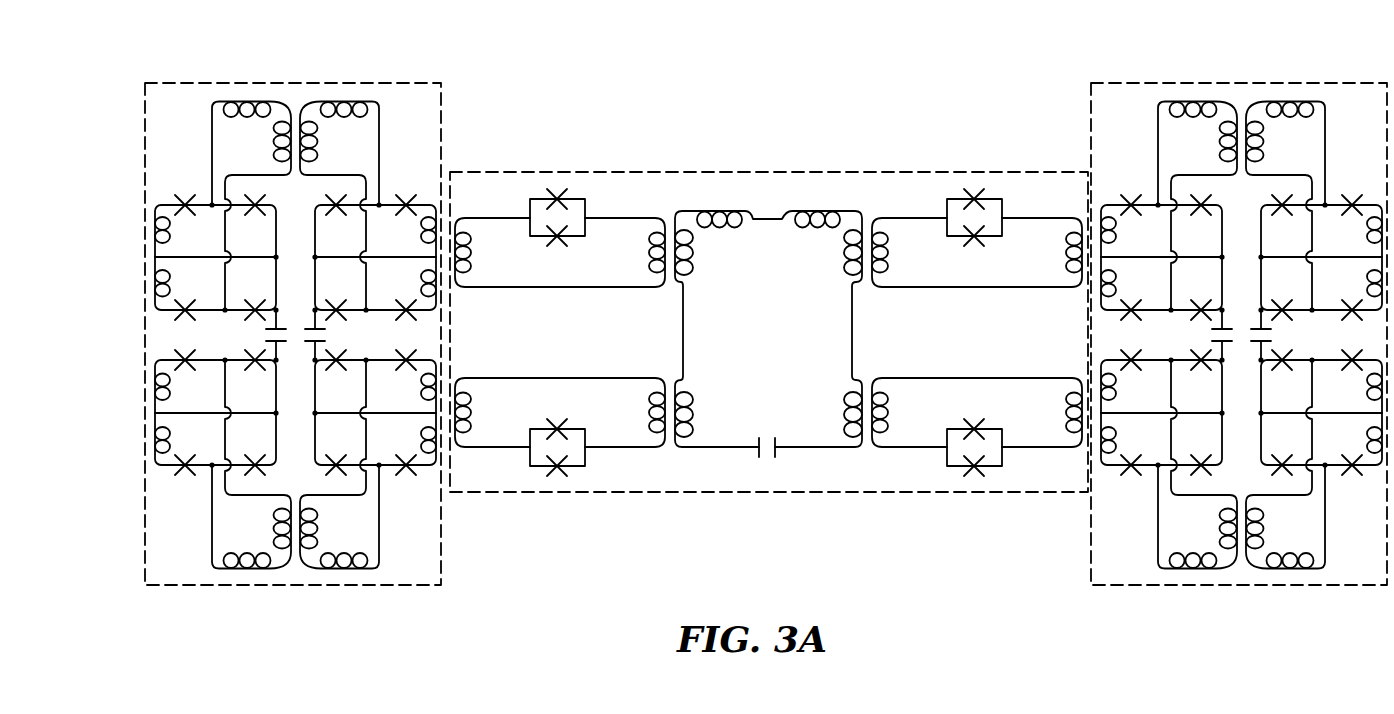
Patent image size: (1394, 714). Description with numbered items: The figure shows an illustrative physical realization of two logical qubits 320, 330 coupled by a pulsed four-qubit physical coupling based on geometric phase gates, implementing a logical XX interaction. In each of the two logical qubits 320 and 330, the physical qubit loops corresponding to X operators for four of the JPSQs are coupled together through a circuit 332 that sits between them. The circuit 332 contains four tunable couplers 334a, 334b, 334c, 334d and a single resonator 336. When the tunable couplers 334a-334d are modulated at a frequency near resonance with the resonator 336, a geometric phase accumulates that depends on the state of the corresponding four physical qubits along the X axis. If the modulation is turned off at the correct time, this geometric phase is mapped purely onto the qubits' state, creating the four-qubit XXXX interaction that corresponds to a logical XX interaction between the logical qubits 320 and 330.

The logical qubit 320 is at (232, 82).
The logical qubit 330 is at (1288, 82).
The circuit 332 is at (769, 303).
The tunable coupler 334a is at (567, 287).
The tunable coupler 334b is at (540, 378).
The tunable coupler 334c is at (987, 287).
The tunable coupler 334d is at (960, 378).
The resonator 336 is at (737, 447).